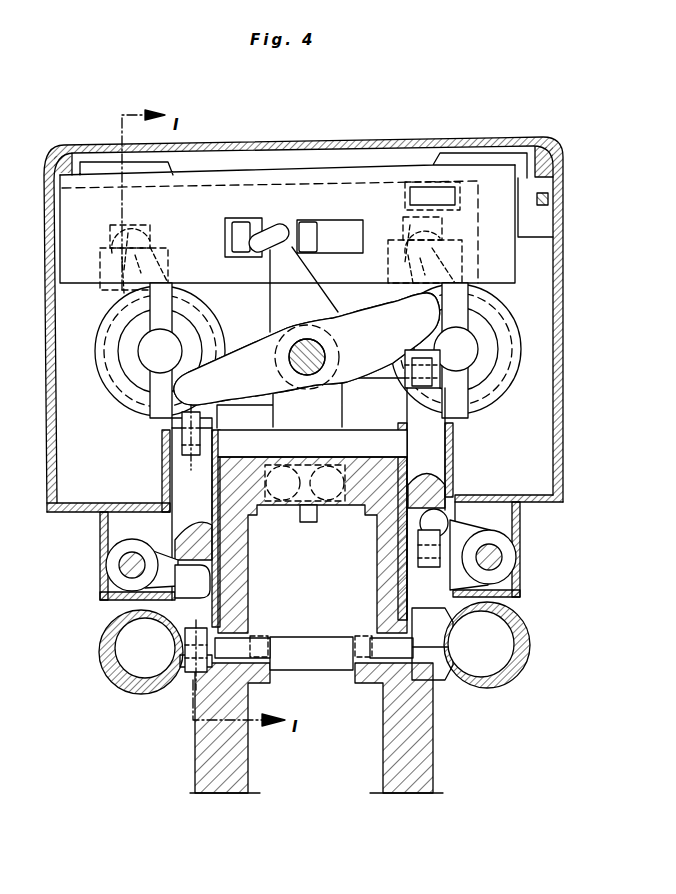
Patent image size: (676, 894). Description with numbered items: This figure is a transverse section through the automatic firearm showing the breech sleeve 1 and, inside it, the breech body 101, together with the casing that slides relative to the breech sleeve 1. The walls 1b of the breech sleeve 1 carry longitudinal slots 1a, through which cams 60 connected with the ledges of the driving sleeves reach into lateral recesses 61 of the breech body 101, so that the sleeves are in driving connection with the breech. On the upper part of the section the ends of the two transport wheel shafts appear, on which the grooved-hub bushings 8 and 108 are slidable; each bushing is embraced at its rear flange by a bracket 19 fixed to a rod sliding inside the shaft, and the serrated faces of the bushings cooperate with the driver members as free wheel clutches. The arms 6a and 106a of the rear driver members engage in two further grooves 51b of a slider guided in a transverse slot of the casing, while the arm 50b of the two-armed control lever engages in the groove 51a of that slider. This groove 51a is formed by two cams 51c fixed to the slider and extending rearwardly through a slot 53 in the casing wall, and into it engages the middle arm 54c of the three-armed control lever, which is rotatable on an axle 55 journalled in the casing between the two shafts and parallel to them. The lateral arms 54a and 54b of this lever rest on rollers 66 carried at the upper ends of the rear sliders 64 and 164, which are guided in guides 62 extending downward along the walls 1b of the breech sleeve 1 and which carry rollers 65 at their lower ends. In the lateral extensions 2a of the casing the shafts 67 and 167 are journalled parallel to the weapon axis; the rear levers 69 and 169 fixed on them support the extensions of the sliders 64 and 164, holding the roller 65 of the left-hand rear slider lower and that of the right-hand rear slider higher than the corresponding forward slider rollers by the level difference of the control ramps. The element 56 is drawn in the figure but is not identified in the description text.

The breech sleeve 1 is at (207, 768).
The longitudinal slots 1a is at (375, 631).
The walls of the breech sleeve 1b is at (387, 547).
The lateral extensions of the casing 2a is at (103, 527).
The arm of the rear driver member 6a is at (115, 243).
The bushing 8 is at (103, 324).
The bracket 19 is at (160, 297).
The arm of the control lever 50b is at (460, 195).
The groove of the slider 51a is at (262, 228).
The further grooves of the slider 51b is at (128, 233).
The cams 51c is at (240, 228).
The slot in the casing wall 53 is at (343, 224).
The lateral arm of the control lever 54a is at (245, 357).
The lateral arm of the control lever 54b is at (367, 325).
The middle arm of the control lever 54c is at (258, 248).
The axle 55 is at (320, 380).
The guide roller 56 is at (100, 653).
The cams 60 is at (355, 642).
The lateral recesses of the breech body 61 is at (351, 655).
The guides 62 is at (168, 490).
The rear slider 64 is at (178, 460).
The rollers 65 is at (432, 567).
The rollers 66 is at (187, 432).
The shaft 67 is at (119, 570).
The rear lever 69 is at (124, 607).
The breech body 101 is at (312, 672).
The arm of the rear driver member 106a is at (435, 233).
The bushing 108 is at (510, 313).
The rear slider 164 is at (436, 448).
The shaft 167 is at (506, 551).
The rear lever 169 is at (468, 532).